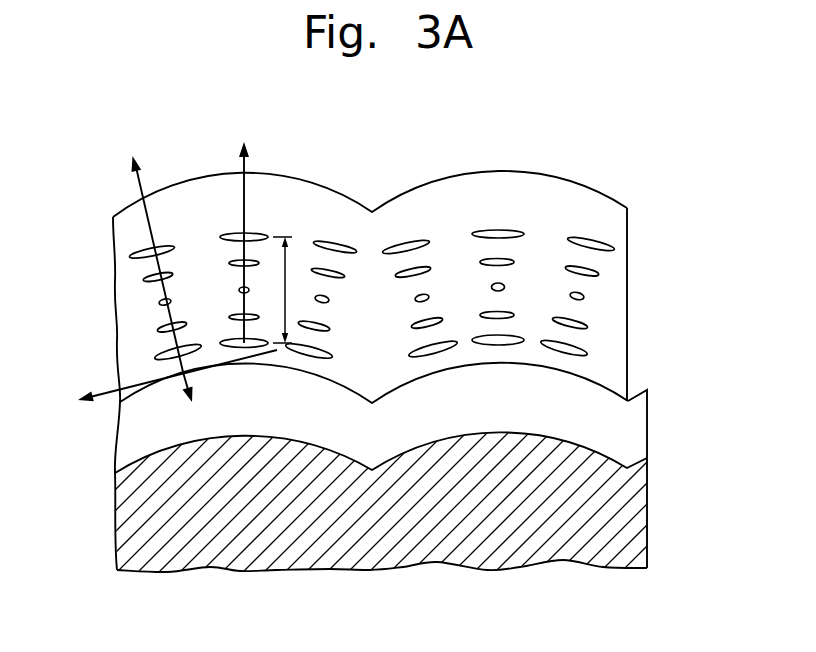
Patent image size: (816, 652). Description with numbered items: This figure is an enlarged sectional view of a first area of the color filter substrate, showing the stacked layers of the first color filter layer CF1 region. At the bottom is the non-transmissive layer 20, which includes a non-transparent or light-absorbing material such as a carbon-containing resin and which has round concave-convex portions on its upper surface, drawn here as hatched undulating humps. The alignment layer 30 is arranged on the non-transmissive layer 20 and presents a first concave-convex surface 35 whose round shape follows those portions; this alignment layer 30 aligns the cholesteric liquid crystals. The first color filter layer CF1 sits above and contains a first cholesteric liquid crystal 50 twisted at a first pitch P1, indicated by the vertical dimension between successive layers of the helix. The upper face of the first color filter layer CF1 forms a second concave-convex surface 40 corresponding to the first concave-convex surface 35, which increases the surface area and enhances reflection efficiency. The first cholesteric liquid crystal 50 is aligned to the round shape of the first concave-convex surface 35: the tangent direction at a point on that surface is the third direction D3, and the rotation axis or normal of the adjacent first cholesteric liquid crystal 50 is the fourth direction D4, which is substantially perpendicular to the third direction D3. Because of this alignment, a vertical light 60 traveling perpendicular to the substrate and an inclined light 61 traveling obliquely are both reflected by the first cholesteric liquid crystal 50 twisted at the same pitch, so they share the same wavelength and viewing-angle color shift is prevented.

The non-transmissive layer 20 is at (635, 518).
The alignment layer 30 is at (635, 429).
The first concave-convex surface 35 is at (598, 381).
The second concave-convex surface 40 is at (496, 170).
The first cholesteric liquid crystal 50 is at (212, 256).
The vertical light 60 is at (248, 163).
The inclined light 61 is at (138, 180).
The first color filter layer CF1 is at (612, 295).
The first pitch P1 is at (275, 290).
The third direction D3 is at (162, 382).
The fourth direction D4 is at (193, 401).